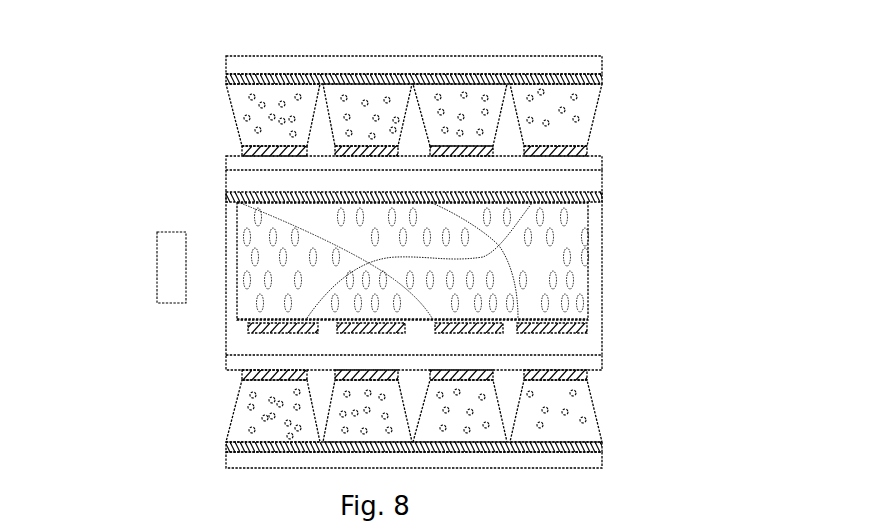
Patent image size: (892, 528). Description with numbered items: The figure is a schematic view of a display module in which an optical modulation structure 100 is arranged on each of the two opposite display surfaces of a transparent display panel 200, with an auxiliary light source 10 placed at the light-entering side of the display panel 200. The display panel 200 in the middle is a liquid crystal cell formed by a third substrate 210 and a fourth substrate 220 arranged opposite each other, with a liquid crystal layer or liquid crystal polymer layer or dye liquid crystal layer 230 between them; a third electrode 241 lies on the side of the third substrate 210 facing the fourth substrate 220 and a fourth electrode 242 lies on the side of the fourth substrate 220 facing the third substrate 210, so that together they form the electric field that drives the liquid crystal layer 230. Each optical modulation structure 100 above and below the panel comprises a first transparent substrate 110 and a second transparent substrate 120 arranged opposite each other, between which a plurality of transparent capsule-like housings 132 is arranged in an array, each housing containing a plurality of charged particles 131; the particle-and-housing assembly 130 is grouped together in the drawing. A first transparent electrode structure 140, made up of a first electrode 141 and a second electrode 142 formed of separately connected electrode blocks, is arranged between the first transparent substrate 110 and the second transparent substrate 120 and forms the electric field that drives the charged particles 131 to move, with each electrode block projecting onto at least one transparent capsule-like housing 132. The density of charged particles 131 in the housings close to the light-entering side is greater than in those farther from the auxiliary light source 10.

The auxiliary light source 10 is at (165, 272).
The optical modulation structure 100 is at (434, 247).
The first transparent substrate 110 is at (602, 60).
The second transparent substrate 120 is at (602, 158).
The light-absorbing unit 130 is at (169, 114).
The charged particle 131 is at (228, 132).
The transparent capsule-like housing 132 is at (228, 118).
The first transparent electrode structure 140 is at (396, 258).
The first electrode 141 is at (602, 79).
The second electrode 142 is at (577, 147).
The display panel 200 is at (538, 262).
The third substrate 210 is at (602, 183).
The fourth substrate 220 is at (602, 345).
The liquid crystal layer 230 is at (560, 255).
The third electrode 241 is at (602, 203).
The fourth electrode 242 is at (565, 318).